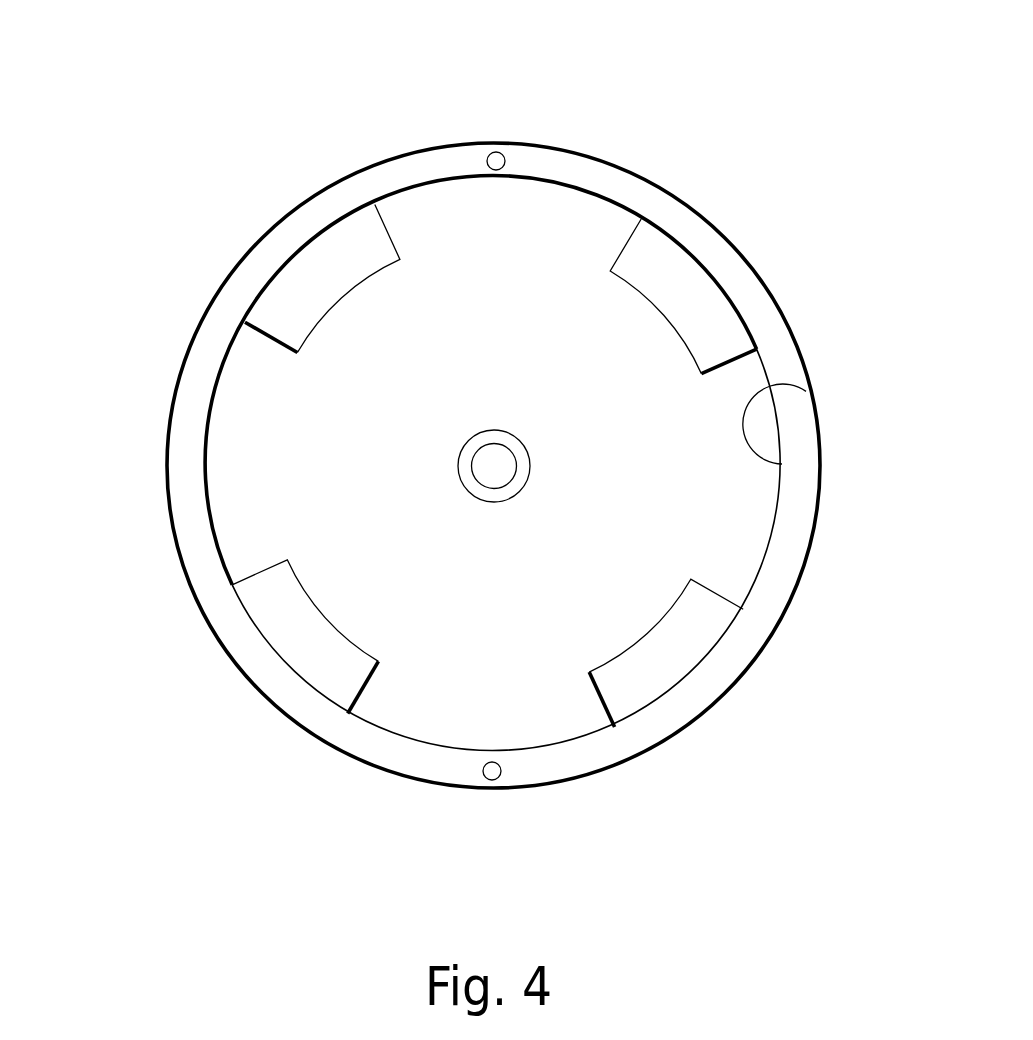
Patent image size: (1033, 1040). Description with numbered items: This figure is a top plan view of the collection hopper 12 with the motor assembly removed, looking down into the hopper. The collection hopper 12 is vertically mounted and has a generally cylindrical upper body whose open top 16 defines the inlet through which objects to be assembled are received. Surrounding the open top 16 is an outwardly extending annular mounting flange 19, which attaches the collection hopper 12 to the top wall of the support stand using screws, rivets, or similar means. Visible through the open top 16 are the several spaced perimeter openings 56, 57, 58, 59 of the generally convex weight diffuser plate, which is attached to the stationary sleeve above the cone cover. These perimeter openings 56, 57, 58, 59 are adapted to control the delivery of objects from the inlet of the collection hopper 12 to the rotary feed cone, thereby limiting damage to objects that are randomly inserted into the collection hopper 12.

The collection hopper 12 is at (245, 166).
The open top 16 is at (806, 391).
The annular mounting flange 19 is at (175, 483).
The perimeter opening 56 is at (667, 317).
The perimeter opening 57 is at (355, 283).
The perimeter opening 58 is at (327, 623).
The perimeter opening 59 is at (657, 627).